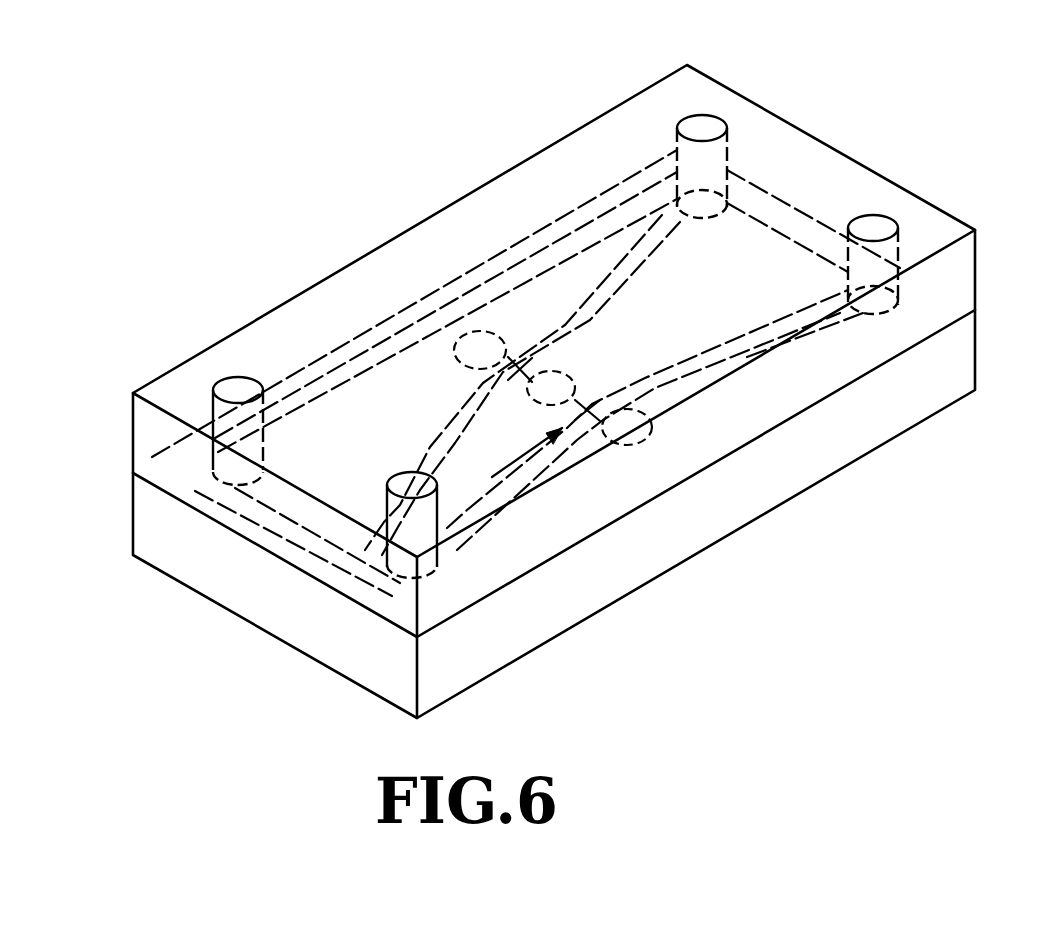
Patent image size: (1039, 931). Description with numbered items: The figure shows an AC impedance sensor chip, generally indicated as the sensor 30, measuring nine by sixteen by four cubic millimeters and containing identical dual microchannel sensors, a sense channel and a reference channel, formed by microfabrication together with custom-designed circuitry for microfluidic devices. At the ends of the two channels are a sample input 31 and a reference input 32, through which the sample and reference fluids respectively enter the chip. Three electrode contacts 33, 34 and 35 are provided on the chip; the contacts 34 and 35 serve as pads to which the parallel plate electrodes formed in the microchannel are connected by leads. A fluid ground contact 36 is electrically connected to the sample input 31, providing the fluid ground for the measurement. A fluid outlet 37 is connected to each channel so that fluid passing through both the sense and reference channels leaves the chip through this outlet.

The sensor 30 is at (437, 190).
The sample input 31 is at (708, 125).
The reference input 32 is at (873, 230).
The electrode contact 33 is at (442, 374).
The electrode contact 34 is at (605, 348).
The electrode contact 35 is at (653, 428).
The fluid ground contact 36 is at (232, 388).
The fluid outlet 37 is at (392, 483).